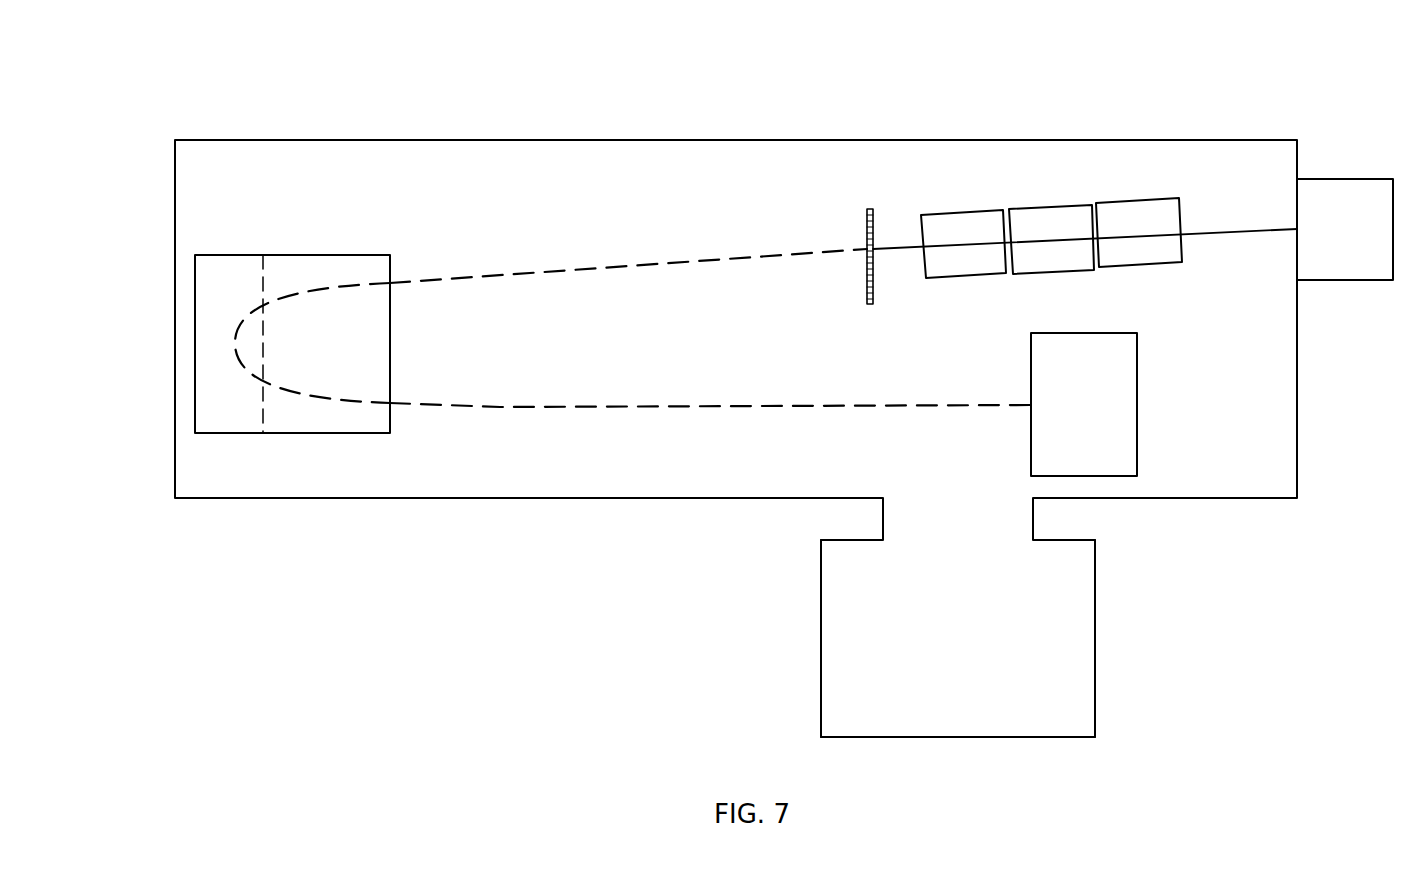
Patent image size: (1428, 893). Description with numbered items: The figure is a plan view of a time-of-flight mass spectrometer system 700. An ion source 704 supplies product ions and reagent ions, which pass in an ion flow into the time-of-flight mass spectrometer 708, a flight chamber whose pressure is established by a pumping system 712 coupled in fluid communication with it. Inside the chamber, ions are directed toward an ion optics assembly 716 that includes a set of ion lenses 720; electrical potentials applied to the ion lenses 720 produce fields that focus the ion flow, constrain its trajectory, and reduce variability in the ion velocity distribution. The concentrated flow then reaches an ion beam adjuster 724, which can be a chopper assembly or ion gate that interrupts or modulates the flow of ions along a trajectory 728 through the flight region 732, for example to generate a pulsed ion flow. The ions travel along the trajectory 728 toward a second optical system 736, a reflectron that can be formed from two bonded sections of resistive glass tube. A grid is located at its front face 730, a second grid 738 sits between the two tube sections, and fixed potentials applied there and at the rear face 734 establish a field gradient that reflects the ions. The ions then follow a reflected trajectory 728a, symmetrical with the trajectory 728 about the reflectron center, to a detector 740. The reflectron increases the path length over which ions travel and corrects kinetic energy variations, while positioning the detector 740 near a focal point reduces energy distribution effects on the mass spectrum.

The time-of-flight mass spectrometer system 700 is at (729, 80).
The ion source 704 is at (1390, 178).
The time-of-flight mass spectrometer 708 is at (1249, 128).
The pumping system 712 is at (1095, 615).
The ion optics assembly 716 is at (1051, 242).
The ion lenses 720 is at (960, 268).
The ion beam adjuster 724 is at (875, 206).
The trajectory 728 is at (582, 268).
The reflected trajectory 728a is at (718, 403).
The front face 730 is at (390, 343).
The flight region 732 is at (617, 321).
The rear face 734 is at (196, 370).
The second optical system 736 is at (299, 255).
The second grid 738 is at (263, 433).
The detector 740 is at (1137, 445).